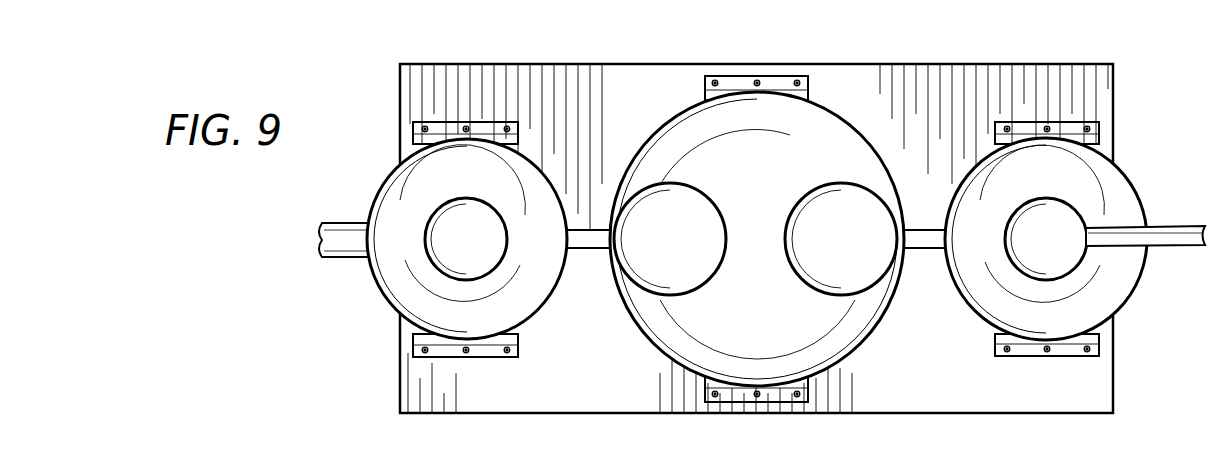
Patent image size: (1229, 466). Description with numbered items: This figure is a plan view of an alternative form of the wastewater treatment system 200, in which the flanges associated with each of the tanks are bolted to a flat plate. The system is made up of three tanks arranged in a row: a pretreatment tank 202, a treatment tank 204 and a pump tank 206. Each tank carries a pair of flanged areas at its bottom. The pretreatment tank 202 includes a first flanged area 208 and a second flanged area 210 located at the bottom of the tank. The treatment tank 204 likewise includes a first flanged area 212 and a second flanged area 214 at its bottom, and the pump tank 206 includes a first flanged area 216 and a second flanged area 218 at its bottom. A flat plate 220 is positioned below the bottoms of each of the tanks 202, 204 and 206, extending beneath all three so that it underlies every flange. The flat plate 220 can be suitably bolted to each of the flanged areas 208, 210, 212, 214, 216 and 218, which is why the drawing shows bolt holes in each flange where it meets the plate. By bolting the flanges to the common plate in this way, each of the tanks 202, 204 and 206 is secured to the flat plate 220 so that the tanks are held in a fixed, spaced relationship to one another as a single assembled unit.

The wastewater treatment system 200 is at (917, 50).
The pretreatment tank 202 is at (518, 170).
The treatment tank 204 is at (865, 152).
The pump tank 206 is at (1112, 182).
The first flanged area 208 is at (492, 128).
The second flanged area 210 is at (500, 356).
The first flanged area 212 is at (777, 79).
The second flanged area 214 is at (805, 393).
The first flanged area 216 is at (1099, 123).
The second flanged area 218 is at (1093, 351).
The flat plate 220 is at (608, 71).